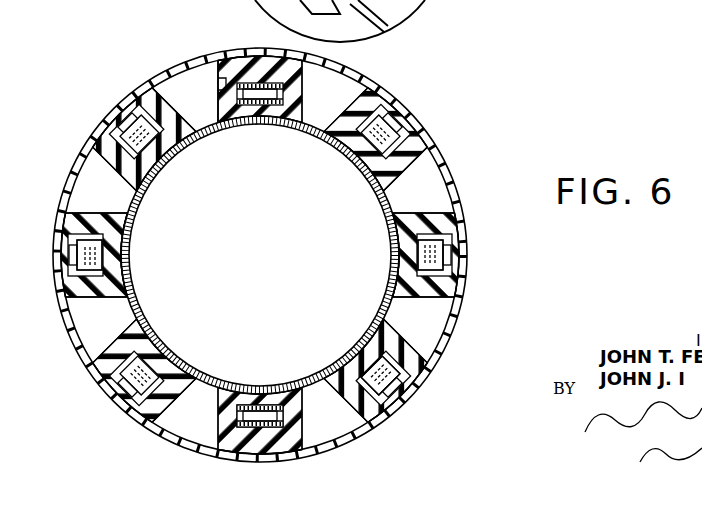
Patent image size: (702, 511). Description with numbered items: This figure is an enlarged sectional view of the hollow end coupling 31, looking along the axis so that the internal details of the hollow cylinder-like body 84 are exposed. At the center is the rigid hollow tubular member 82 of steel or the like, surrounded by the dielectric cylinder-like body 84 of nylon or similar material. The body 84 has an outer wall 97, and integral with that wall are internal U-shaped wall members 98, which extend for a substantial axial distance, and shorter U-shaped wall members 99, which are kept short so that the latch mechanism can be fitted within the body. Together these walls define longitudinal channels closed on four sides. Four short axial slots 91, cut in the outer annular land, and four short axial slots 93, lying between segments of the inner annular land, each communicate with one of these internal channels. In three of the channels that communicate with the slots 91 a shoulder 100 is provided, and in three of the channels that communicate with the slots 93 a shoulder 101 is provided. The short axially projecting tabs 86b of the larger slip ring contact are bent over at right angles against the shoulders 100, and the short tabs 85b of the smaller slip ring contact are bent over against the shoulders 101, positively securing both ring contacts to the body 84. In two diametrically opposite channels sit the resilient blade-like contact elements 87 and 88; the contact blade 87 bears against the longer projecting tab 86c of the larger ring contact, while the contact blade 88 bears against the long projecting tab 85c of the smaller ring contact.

The hollow end coupling 31 is at (273, 239).
The rigid hollow tubular member 82 is at (142, 187).
The hollow cylinder-like body 84 is at (273, 239).
The short axially projecting tabs 85b is at (142, 88).
The long axially projecting tab 85c is at (280, 107).
The short axially projecting tabs 86b is at (65, 226).
The longer axially projecting tab 86c is at (302, 417).
The resilient blade-like contact element 87 is at (255, 435).
The resilient blade-like contact element 88 is at (222, 87).
The short axial slots 91 is at (65, 265).
The short axial slots 93 is at (262, 75).
The outer wall 97 is at (448, 189).
The U-shaped wall members 98 is at (207, 57).
The U-shaped wall members 99 is at (115, 238).
The shoulder 100 is at (98, 270).
The shoulder 101 is at (118, 118).